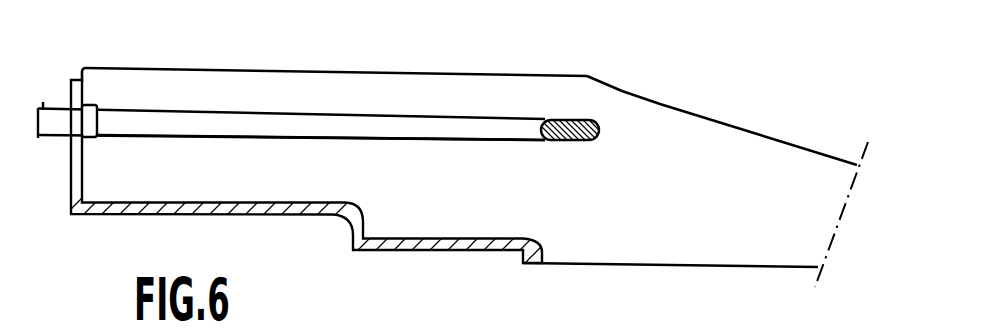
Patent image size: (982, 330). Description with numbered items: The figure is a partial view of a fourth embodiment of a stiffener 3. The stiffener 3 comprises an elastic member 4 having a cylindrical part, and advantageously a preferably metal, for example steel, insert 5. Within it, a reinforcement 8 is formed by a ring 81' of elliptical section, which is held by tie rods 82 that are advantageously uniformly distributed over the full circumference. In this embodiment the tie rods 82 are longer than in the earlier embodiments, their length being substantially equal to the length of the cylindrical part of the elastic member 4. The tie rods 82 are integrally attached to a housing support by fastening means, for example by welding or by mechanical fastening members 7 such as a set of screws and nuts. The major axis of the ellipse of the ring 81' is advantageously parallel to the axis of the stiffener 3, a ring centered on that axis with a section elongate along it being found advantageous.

The stiffener 3 is at (664, 100).
The elastic member 4 is at (488, 73).
The insert 5 is at (280, 214).
The mechanical fastening members 7 is at (53, 110).
The reinforcement 8 is at (467, 111).
The ring of elliptical section 81' is at (584, 84).
The tie rods 82 is at (340, 142).